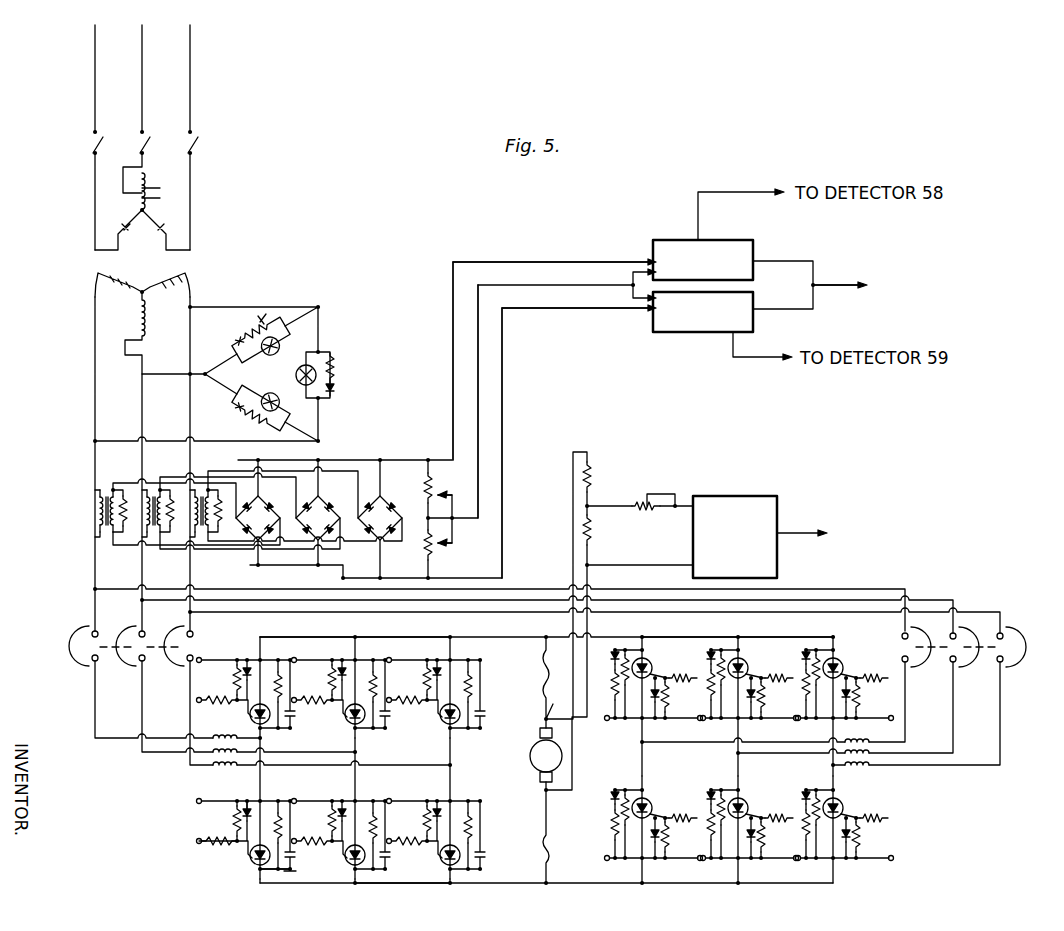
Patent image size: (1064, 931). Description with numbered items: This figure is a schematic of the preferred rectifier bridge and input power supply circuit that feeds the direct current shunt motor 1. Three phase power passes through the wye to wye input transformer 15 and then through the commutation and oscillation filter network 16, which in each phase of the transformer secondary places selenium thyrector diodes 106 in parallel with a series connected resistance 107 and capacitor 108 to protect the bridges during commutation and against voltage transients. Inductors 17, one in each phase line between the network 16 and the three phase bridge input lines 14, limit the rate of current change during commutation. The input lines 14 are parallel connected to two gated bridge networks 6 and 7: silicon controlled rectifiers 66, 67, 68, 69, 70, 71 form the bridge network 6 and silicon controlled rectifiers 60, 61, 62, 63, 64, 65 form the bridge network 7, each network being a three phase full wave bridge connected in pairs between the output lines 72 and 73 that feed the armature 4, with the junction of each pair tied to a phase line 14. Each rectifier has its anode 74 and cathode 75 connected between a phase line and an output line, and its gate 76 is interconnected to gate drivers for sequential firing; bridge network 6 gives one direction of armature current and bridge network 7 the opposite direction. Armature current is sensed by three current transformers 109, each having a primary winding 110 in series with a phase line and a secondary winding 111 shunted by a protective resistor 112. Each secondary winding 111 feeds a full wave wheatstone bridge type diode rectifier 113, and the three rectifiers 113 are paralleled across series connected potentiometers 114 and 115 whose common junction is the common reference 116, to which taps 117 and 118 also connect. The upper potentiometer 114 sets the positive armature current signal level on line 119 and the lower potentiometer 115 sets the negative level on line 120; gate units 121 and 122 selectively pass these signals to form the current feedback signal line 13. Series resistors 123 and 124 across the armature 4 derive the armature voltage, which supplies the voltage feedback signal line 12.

The direct current shunt motor 1 is at (528, 765).
The armature 4 is at (562, 760).
The bridge network 6 is at (318, 756).
The bridge network 7 is at (702, 782).
The voltage feedback signal line 12 is at (800, 530).
The current feedback signal line 13 is at (838, 284).
The three phase bridge input lines 14 is at (165, 753).
The input transformer 15 is at (190, 262).
The commutation and oscillation filter network 16 is at (290, 387).
The inductors 17 is at (213, 766).
The silicon controlled rectifier 60 is at (650, 660).
The silicon controlled rectifier 61 is at (652, 800).
The silicon controlled rectifier 62 is at (748, 663).
The silicon controlled rectifier 63 is at (748, 800).
The silicon controlled rectifier 64 is at (843, 660).
The silicon controlled rectifier 65 is at (845, 800).
The silicon controlled rectifier 66 is at (250, 863).
The silicon controlled rectifier 67 is at (250, 714).
The silicon controlled rectifier 68 is at (343, 863).
The silicon controlled rectifier 69 is at (346, 718).
The silicon controlled rectifier 70 is at (482, 866).
The silicon controlled rectifier 71 is at (442, 718).
The output line 72 is at (495, 637).
The output line 73 is at (420, 870).
The anode 74 is at (272, 870).
The cathode 75 is at (265, 850).
The gate 76 is at (250, 848).
The selenium thyrector diodes 106 is at (318, 352).
The resistance 107 is at (247, 333).
The capacitor 108 is at (262, 318).
The current transformers 109 is at (153, 490).
The primary winding 110 is at (98, 500).
The secondary winding 111 is at (110, 526).
The protective resistor 112 is at (130, 545).
The full wave wheatstone bridge type diode rectifier 113 is at (390, 526).
The potentiometer 114 is at (425, 474).
The potentiometer 115 is at (438, 533).
The common reference 116 is at (480, 458).
The tap 117 is at (440, 491).
The tap 118 is at (440, 547).
The potentiometer output line 119 is at (540, 261).
The potentiometer output line 120 is at (548, 309).
The gate unit 121 is at (668, 240).
The gate unit 122 is at (672, 332).
The resistor 123 is at (592, 480).
The resistor 124 is at (592, 540).